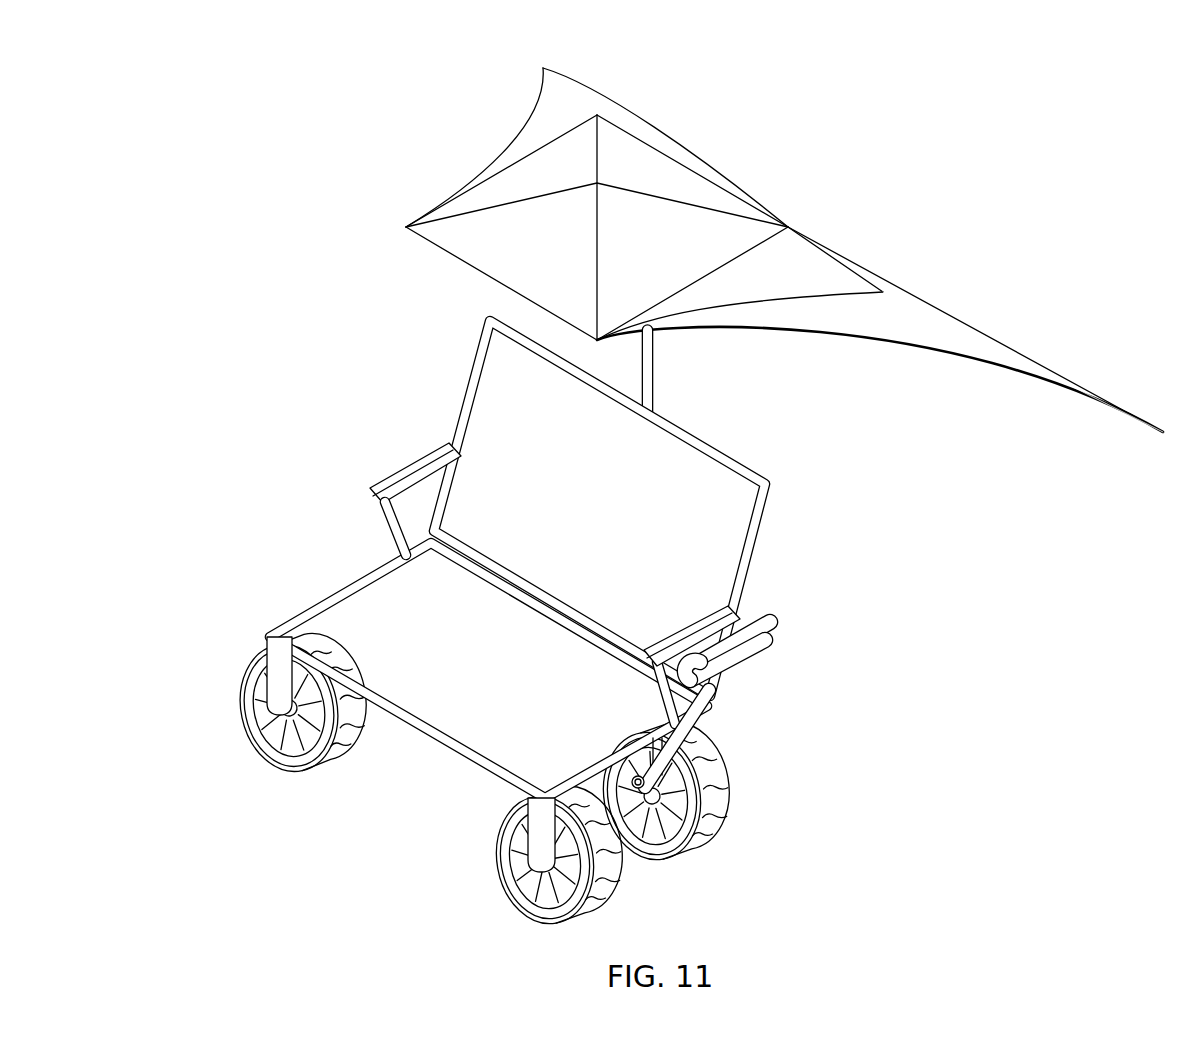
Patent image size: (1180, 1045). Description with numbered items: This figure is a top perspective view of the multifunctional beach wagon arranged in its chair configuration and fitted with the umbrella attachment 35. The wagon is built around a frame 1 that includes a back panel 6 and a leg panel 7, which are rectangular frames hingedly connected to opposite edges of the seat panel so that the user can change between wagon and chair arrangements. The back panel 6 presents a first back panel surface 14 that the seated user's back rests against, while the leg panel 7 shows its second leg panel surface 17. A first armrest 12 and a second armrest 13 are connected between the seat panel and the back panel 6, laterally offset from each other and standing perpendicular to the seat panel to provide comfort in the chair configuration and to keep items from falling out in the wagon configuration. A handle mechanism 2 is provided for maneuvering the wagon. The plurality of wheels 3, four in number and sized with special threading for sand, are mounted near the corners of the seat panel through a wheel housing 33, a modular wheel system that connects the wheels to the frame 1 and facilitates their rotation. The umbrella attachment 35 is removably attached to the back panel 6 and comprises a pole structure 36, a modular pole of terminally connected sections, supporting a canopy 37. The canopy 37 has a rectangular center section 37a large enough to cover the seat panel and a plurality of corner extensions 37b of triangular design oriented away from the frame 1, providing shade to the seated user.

The frame 1 is at (375, 333).
The handle mechanism 2 is at (727, 723).
The plurality of wheels 3 is at (345, 752).
The back panel 6 is at (755, 542).
The leg panel 7 is at (350, 590).
The first armrest 12 is at (714, 621).
The second armrest 13 is at (415, 468).
The first back panel surface 14 is at (720, 507).
The second leg panel surface 17 is at (380, 593).
The wheel housing 33 is at (283, 698).
The umbrella attachment 35 is at (705, 358).
The pole structure 36 is at (647, 352).
The canopy 37 is at (847, 205).
The rectangular center section 37a is at (505, 250).
The plurality of corner extensions 37b is at (1066, 387).